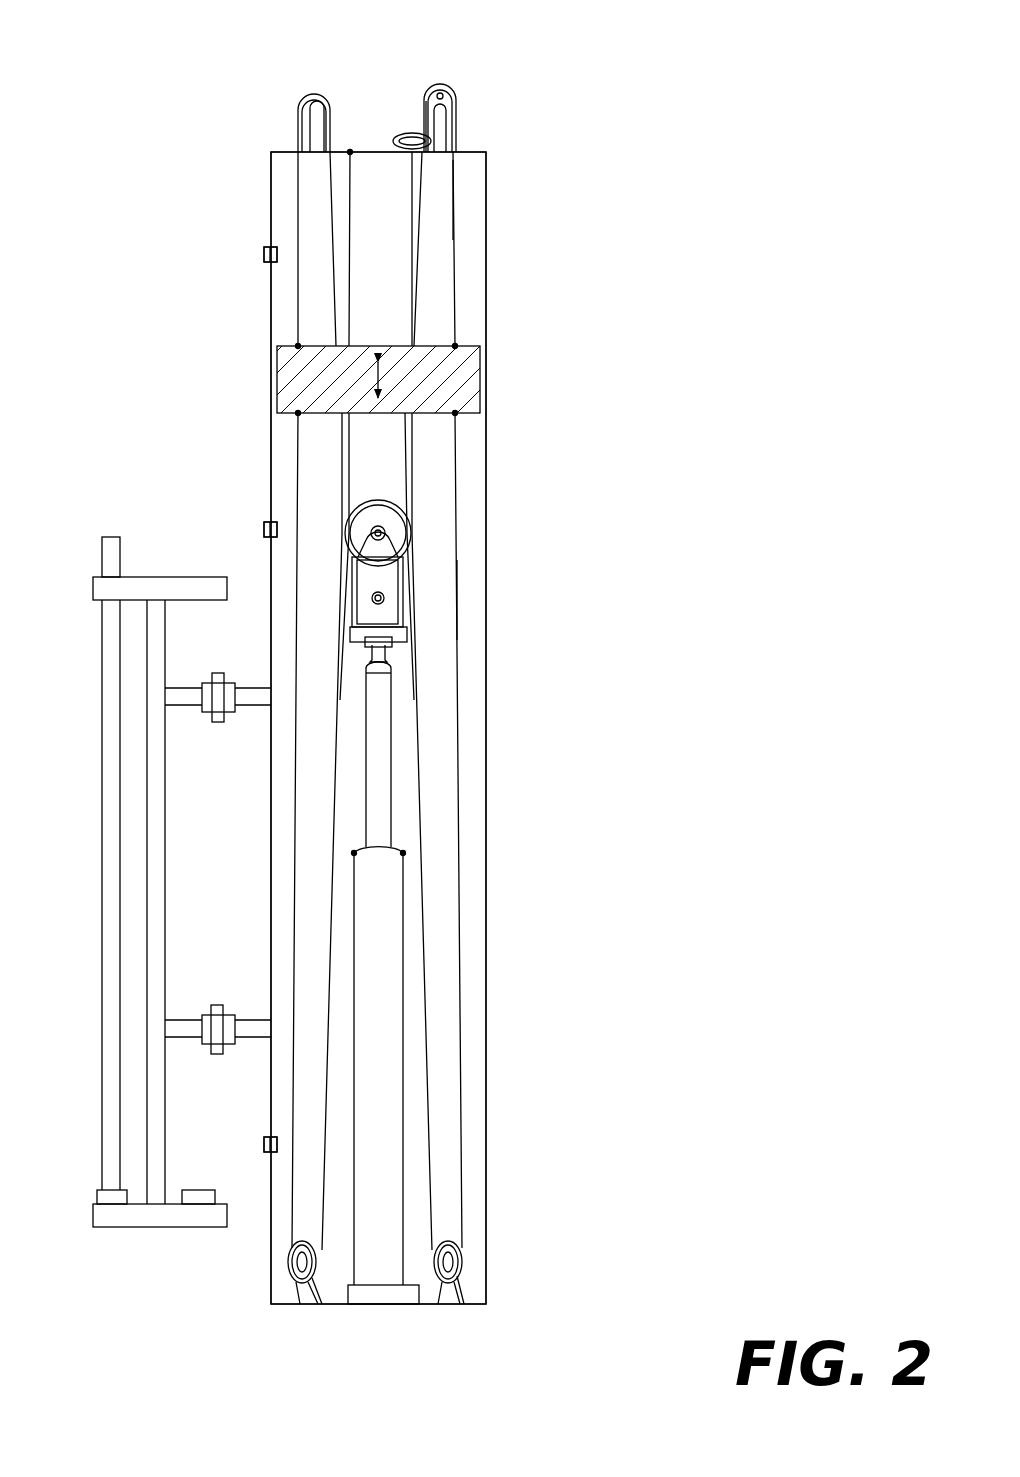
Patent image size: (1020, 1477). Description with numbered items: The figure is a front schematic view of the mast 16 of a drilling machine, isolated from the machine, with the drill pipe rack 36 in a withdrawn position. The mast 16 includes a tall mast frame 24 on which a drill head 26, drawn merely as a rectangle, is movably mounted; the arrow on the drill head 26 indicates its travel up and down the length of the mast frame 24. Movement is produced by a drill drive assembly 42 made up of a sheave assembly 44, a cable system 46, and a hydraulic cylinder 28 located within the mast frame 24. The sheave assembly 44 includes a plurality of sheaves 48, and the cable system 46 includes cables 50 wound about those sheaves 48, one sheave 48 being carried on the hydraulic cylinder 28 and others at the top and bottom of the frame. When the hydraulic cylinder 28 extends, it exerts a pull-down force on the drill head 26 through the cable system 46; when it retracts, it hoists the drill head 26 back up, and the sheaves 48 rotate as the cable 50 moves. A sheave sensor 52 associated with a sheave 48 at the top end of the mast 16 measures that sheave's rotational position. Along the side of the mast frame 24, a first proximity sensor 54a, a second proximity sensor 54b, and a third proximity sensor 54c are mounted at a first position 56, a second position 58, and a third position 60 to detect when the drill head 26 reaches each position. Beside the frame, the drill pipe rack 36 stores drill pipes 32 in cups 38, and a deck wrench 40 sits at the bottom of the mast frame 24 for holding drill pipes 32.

The mast 16 is at (168, 162).
The mast frame 24 is at (486, 433).
The drill head 26 is at (486, 378).
The hydraulic cylinder 28 is at (390, 1000).
The drill pipes 32 is at (102, 808).
The drill pipe rack 36 is at (82, 519).
The cups 38 is at (97, 1198).
The deck wrench 40 is at (385, 1298).
The drill drive assembly 42 is at (534, 603).
The sheave assembly 44 is at (484, 112).
The cable system 46 is at (533, 218).
The sheave 48 is at (312, 94).
The cable 50 is at (453, 228).
The sheave sensor 52 is at (424, 128).
The first proximity sensor 54a is at (265, 1140).
The second proximity sensor 54b is at (265, 537).
The third proximity sensor 54c is at (265, 262).
The first position 56 is at (266, 1152).
The second position 58 is at (266, 522).
The third position 60 is at (266, 247).